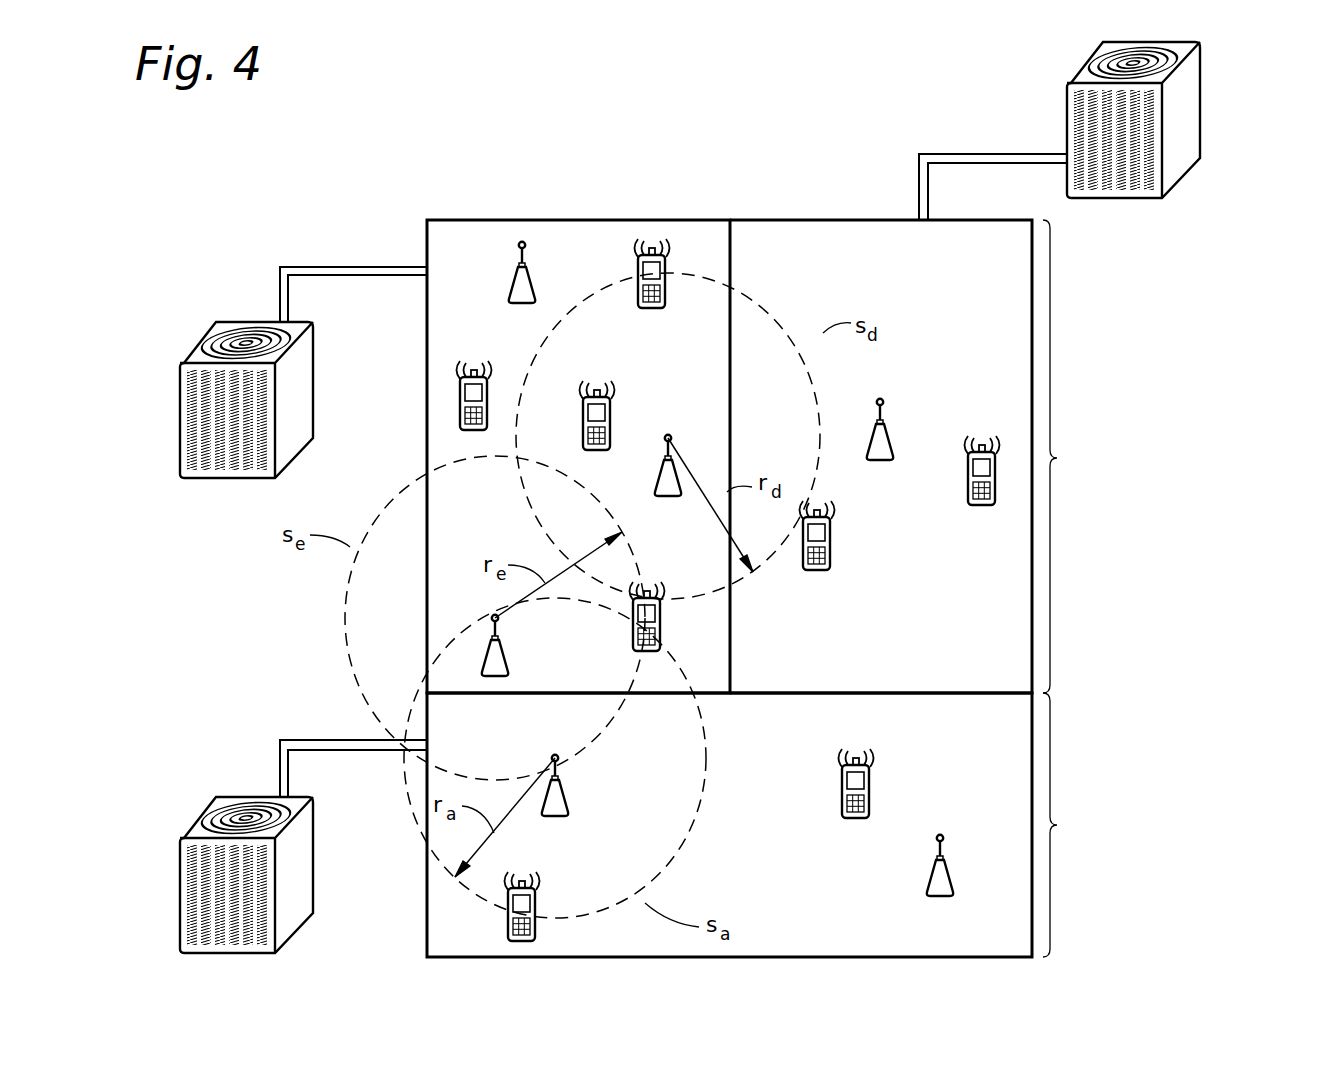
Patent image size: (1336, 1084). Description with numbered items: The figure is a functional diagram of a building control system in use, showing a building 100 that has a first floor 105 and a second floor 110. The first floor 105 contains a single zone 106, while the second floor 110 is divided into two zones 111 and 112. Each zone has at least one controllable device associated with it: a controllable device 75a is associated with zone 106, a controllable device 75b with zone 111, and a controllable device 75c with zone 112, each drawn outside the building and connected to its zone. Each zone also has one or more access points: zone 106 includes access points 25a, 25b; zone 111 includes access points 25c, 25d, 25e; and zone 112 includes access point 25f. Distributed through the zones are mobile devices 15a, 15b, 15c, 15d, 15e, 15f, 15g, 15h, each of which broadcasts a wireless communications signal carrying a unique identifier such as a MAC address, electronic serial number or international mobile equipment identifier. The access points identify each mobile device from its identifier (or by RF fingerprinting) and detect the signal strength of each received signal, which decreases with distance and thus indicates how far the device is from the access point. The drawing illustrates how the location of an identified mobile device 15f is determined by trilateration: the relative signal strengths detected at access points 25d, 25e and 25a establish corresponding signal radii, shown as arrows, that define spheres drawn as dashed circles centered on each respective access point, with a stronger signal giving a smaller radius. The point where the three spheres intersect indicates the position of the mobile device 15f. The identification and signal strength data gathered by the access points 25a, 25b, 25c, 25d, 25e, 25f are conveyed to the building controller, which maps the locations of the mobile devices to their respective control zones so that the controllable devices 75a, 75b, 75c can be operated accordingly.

The building 100 is at (860, 130).
The first floor 105 is at (1076, 825).
The second floor 110 is at (1076, 456).
The zone 106 is at (768, 728).
The zone 111 is at (598, 255).
The zone 112 is at (904, 255).
The mobile device 15a is at (537, 905).
The mobile device 15b is at (870, 783).
The mobile device 15c is at (488, 377).
The mobile device 15d is at (610, 418).
The mobile device 15e is at (652, 308).
The mobile device 15f is at (660, 630).
The mobile device 15g is at (818, 574).
The mobile device 15h is at (978, 508).
The access point 25a is at (575, 800).
The access point 25b is at (927, 878).
The access point 25c is at (512, 271).
The access point 25d is at (654, 481).
The access point 25e is at (510, 651).
The access point 25f is at (893, 428).
The controllable device 75a is at (232, 797).
The controllable device 75b is at (242, 325).
The controllable device 75c is at (1187, 183).